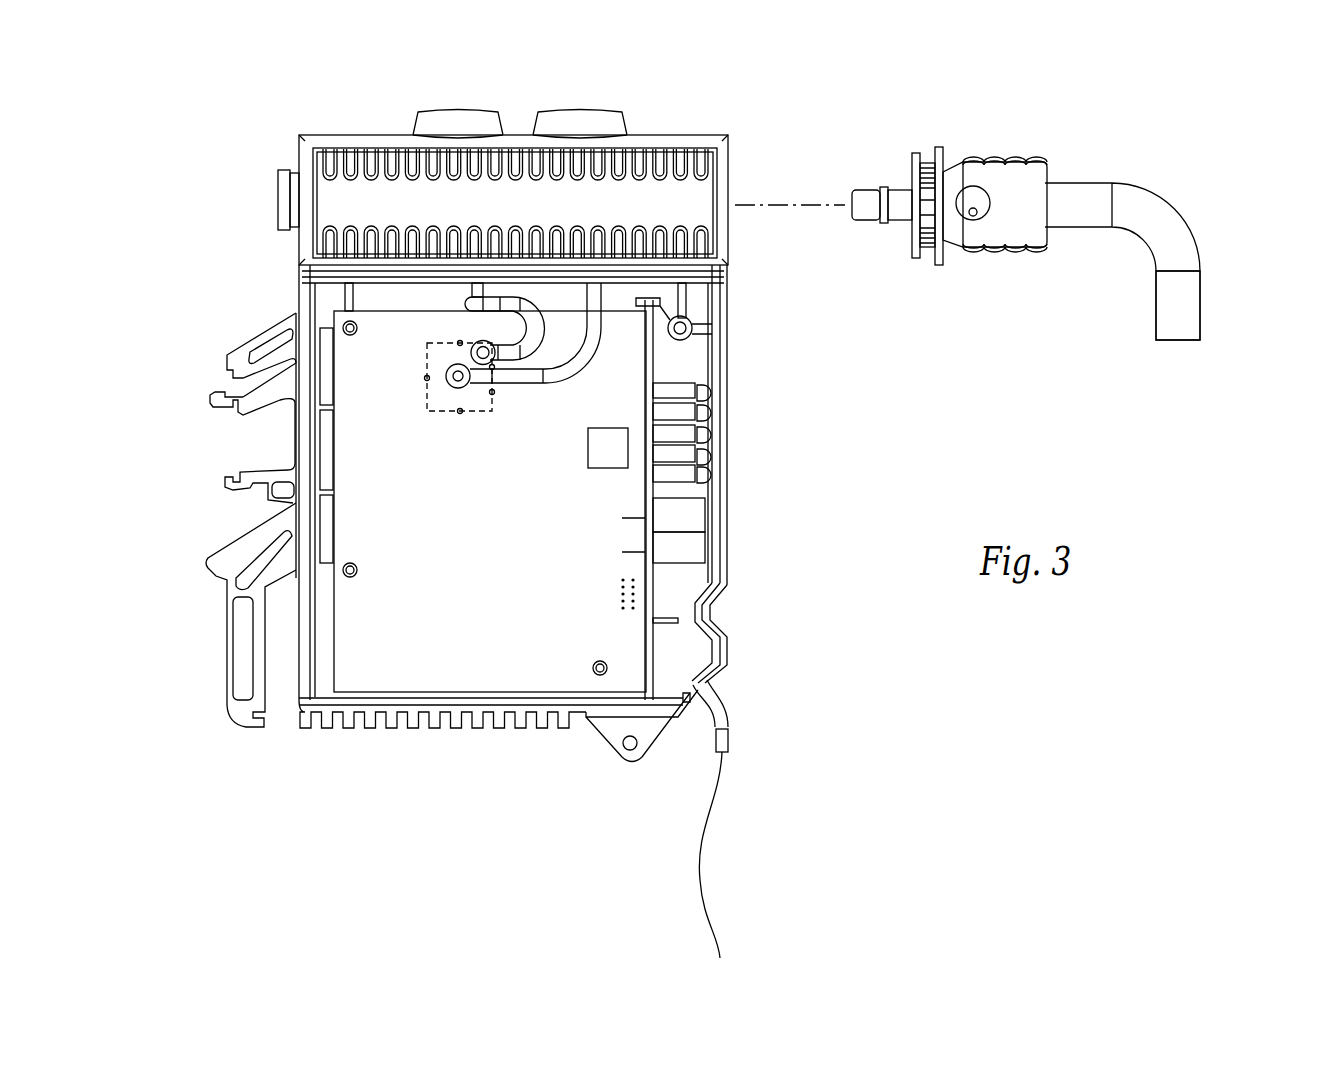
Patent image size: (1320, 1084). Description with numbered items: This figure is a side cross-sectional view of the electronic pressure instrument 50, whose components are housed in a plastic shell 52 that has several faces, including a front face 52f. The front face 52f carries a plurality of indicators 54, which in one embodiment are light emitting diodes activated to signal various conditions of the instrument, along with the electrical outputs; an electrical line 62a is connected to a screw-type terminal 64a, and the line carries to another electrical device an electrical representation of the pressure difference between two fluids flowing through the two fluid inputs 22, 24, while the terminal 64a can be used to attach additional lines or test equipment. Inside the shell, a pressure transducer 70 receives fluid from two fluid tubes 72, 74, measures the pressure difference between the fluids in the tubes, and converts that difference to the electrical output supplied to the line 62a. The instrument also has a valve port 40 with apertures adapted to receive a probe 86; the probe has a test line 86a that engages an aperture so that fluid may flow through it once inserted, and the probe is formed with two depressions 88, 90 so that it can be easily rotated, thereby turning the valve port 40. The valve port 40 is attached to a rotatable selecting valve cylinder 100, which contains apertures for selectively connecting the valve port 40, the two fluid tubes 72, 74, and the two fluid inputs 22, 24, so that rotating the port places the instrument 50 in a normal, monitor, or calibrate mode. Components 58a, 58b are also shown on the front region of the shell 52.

The fluid input 22 is at (412, 124).
The fluid input 24 is at (626, 124).
The valve port 40 is at (735, 180).
The electronic pressure instrument 50 is at (278, 252).
The plastic shell 52 is at (410, 737).
The front face 52f is at (736, 376).
The indicators 54 is at (740, 440).
The first relay module 58a is at (698, 516).
The second relay module 58b is at (698, 548).
The electrical line 62a is at (717, 795).
The screw-type terminal 64a is at (720, 636).
The pressure transducer 70 is at (427, 397).
The fluid tube 72 is at (530, 334).
The fluid tube 74 is at (580, 371).
The hose assembly 86 is at (999, 217).
The test line 86a is at (866, 192).
The depression 88 is at (1000, 160).
The depression 90 is at (1020, 256).
The selecting valve cylinder 100 is at (276, 180).